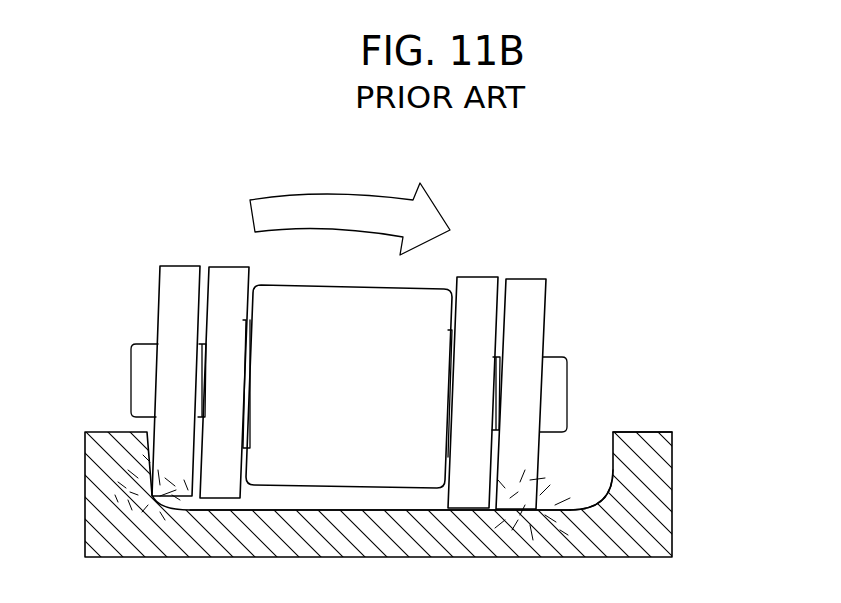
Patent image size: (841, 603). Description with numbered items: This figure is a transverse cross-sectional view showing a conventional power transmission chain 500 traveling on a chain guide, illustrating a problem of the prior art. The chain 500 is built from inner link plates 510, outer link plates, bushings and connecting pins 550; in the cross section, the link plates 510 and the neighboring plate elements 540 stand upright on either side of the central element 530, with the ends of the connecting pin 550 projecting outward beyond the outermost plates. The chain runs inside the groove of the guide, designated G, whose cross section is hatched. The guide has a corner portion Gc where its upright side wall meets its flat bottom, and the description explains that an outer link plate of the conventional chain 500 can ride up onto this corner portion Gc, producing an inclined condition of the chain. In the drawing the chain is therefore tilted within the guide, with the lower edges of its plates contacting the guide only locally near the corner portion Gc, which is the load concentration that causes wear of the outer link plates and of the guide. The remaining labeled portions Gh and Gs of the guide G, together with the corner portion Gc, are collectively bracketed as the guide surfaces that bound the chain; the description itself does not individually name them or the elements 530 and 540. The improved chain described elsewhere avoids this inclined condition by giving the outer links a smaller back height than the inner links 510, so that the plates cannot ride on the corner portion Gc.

The power transmission chain 500 is at (625, 222).
The inner link plate 510 is at (233, 275).
The roller body 530 is at (358, 290).
The flange 540 is at (182, 275).
The connecting pin 550 is at (553, 368).
The groove G is at (744, 395).
The groove side wall Gh is at (613, 445).
The corner portion Gc is at (620, 500).
The groove bottom surface Gs is at (575, 498).